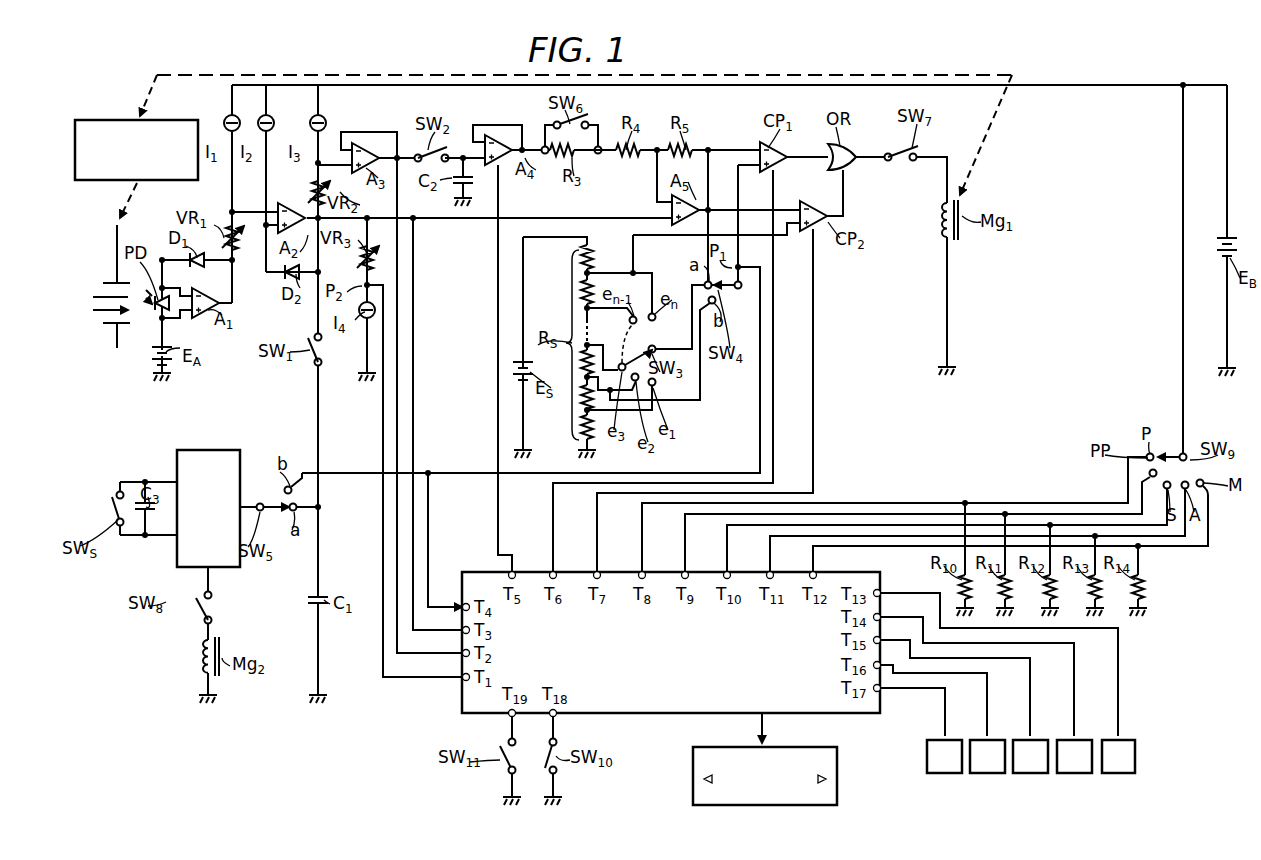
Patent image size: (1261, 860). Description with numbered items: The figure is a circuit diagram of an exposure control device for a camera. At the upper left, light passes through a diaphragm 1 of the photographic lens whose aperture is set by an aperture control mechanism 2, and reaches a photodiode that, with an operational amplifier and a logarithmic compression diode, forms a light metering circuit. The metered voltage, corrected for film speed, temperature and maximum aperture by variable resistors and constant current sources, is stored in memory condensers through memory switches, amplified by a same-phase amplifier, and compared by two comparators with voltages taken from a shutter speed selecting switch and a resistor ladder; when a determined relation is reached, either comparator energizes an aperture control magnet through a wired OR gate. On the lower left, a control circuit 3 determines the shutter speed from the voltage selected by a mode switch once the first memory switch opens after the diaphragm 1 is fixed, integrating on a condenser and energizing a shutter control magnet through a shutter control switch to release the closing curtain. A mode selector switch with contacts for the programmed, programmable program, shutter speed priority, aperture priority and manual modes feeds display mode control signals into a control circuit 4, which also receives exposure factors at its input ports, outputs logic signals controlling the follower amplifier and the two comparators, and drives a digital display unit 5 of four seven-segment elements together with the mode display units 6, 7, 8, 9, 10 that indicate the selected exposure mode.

The diaphragm 1 is at (108, 283).
The aperture control mechanism 2 is at (99, 120).
The control circuit 3 is at (228, 450).
The control circuit 4 is at (464, 572).
The display unit 5 is at (837, 750).
The mode display unit 6 is at (944, 774).
The mode display unit 7 is at (987, 774).
The mode display unit 8 is at (1030, 774).
The mode display unit 9 is at (1074, 774).
The mode display unit 10 is at (1118, 774).